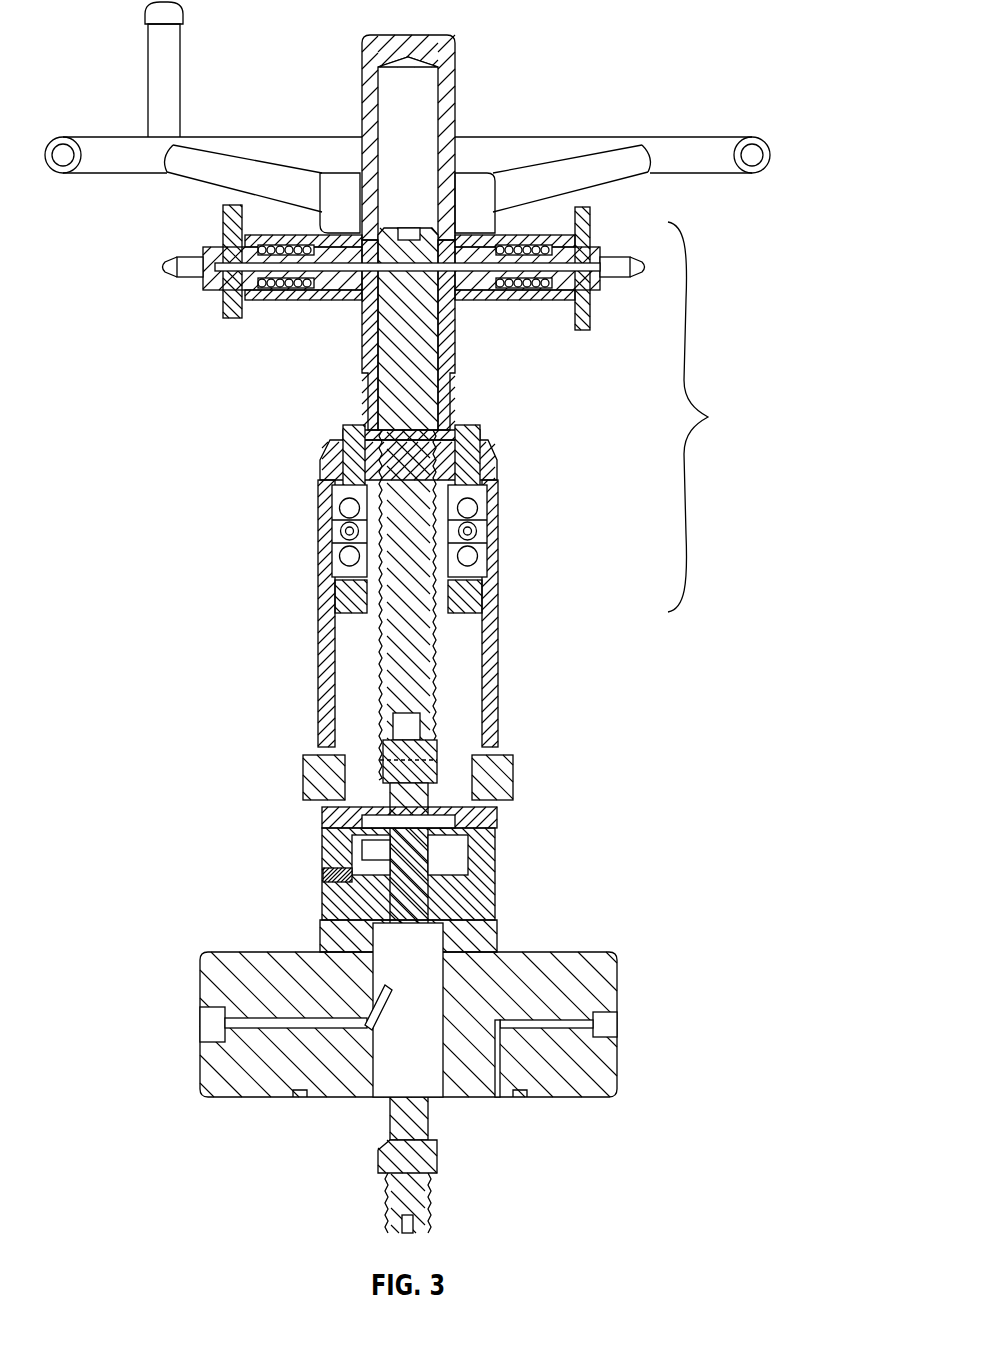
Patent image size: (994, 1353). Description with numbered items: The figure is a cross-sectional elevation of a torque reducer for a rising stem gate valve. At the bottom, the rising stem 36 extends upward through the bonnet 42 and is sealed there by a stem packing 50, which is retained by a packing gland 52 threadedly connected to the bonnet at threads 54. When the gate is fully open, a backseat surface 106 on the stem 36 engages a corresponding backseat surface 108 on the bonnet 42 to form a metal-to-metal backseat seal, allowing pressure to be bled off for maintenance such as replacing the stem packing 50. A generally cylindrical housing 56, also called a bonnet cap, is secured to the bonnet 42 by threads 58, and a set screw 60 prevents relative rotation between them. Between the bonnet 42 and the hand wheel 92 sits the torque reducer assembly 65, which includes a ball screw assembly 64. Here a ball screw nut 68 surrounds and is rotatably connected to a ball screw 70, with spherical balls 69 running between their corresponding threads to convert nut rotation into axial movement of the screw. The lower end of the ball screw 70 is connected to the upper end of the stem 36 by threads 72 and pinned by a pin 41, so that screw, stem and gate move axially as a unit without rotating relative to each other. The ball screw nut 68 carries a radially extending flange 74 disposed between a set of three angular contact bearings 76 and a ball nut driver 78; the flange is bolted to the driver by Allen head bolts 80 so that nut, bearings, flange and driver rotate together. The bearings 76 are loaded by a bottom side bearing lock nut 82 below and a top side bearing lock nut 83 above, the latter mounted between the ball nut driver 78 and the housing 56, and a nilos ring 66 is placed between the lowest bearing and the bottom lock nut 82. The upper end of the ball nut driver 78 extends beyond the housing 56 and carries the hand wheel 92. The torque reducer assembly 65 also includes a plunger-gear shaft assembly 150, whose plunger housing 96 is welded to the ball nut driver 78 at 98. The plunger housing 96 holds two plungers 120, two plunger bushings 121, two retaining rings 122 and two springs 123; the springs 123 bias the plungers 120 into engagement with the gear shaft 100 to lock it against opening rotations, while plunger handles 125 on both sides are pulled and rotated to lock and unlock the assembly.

The rising stem 36 is at (330, 950).
The pin 41 is at (437, 760).
The bonnet 42 is at (598, 985).
The stem packing 50 is at (430, 958).
The packing gland 52 is at (497, 815).
The threads 54 is at (445, 860).
The housing 56 is at (318, 660).
The threads 58 is at (495, 895).
The set screw 60 is at (323, 872).
The ball screw assembly 64 is at (295, 476).
The torque reducer assembly 65 is at (706, 417).
The nilos ring 66 is at (335, 590).
The ball screw nut 68 is at (487, 517).
The balls 69 is at (320, 612).
The ball screw 70 is at (418, 660).
The threads 72 is at (422, 740).
The radially extending flange 74 is at (497, 470).
The angular contact bearings 76 is at (332, 505).
The ball nut driver 78 is at (452, 398).
The Allen head bolts 80 is at (470, 432).
The bottom side bearing lock nut 82 is at (482, 590).
The top side bearing lock nut 83 is at (343, 442).
The hand wheel 92 is at (668, 143).
The plunger housing 96 is at (310, 240).
The weld location 98 is at (455, 300).
The gear shaft 100 is at (388, 405).
The backseat surface 106 is at (428, 1148).
The backseat surface 108 is at (430, 1000).
The plungers 120 is at (345, 292).
The plunger bushings 121 is at (228, 295).
The retaining rings 122 is at (270, 290).
The springs 123 is at (535, 290).
The plunger handles 125 is at (232, 318).
The plunger-gear shaft assembly 150 is at (158, 270).